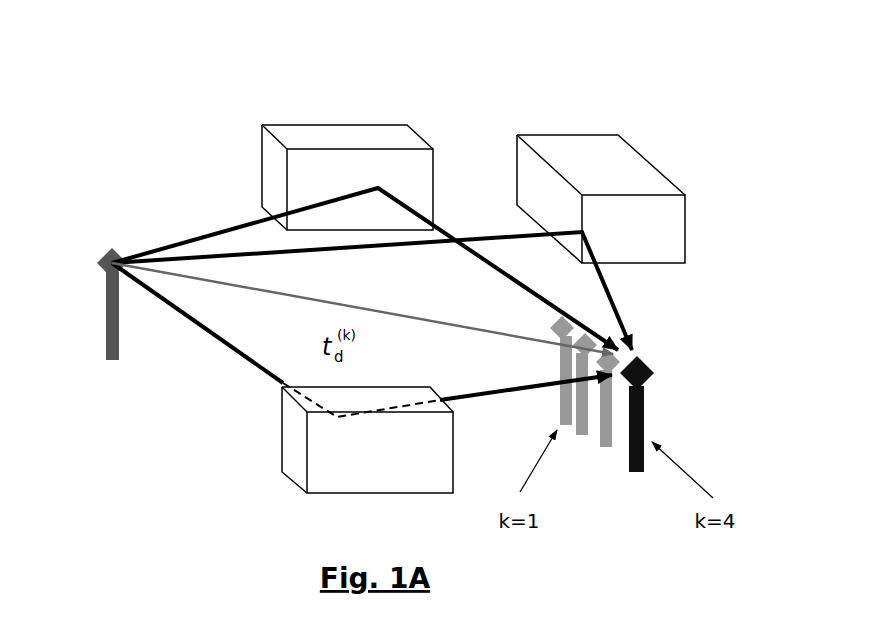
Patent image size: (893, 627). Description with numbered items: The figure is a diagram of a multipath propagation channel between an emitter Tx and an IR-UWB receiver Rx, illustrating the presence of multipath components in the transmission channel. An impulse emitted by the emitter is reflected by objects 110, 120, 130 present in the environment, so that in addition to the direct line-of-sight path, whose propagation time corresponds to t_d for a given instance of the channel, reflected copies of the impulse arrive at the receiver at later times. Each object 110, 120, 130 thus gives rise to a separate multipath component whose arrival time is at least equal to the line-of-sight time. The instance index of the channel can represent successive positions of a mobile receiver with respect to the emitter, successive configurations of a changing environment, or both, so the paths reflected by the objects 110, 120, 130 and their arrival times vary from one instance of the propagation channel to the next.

The reflecting object 110 is at (342, 113).
The reflecting object 120 is at (550, 110).
The reflecting object 130 is at (278, 483).